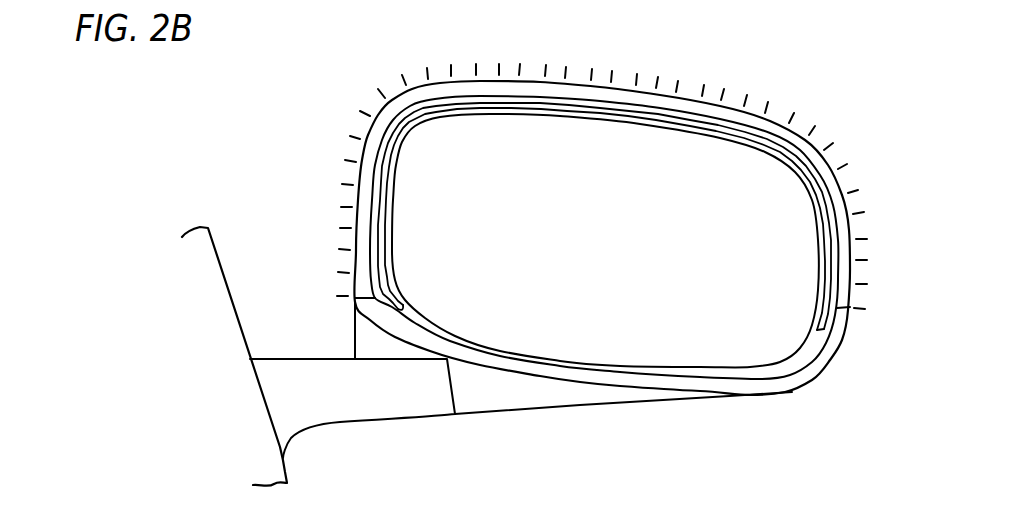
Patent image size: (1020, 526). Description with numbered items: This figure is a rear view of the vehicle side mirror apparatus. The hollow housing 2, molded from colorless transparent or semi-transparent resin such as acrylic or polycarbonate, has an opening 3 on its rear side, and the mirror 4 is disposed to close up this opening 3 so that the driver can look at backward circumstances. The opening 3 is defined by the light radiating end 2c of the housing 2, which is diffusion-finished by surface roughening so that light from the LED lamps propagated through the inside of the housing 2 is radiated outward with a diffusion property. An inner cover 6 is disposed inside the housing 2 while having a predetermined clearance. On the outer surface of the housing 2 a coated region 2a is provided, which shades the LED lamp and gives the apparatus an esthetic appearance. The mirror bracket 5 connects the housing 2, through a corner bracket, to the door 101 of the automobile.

The housing 2 is at (353, 235).
The coated region 2a is at (830, 356).
The light radiating end 2c is at (400, 111).
The opening 3 is at (632, 105).
The mirror 4 is at (753, 171).
The mirror bracket 5 is at (403, 408).
The inner cover 6 is at (385, 183).
The door 101 is at (230, 328).